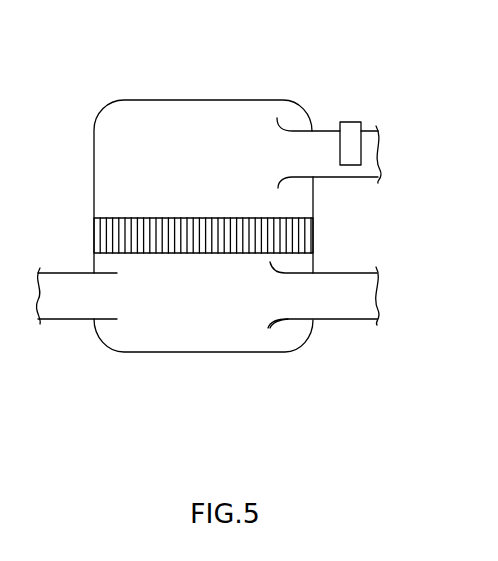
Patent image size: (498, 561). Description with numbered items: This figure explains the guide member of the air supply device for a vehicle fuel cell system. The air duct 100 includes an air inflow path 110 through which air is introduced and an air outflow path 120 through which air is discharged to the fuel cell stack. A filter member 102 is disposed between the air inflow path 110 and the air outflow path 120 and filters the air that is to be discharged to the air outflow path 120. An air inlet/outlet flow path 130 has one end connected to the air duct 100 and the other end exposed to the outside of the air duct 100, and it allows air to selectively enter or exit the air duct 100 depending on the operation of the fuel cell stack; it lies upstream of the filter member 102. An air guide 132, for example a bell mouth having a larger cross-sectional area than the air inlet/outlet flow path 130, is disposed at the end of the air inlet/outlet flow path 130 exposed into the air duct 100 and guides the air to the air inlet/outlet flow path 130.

The air duct 100 is at (208, 352).
The filter member 102 is at (135, 218).
The air inflow path 110 is at (72, 319).
The air outflow path 120 is at (321, 131).
The air inlet/outlet flow path 130 is at (338, 319).
The air guide 132 is at (287, 323).